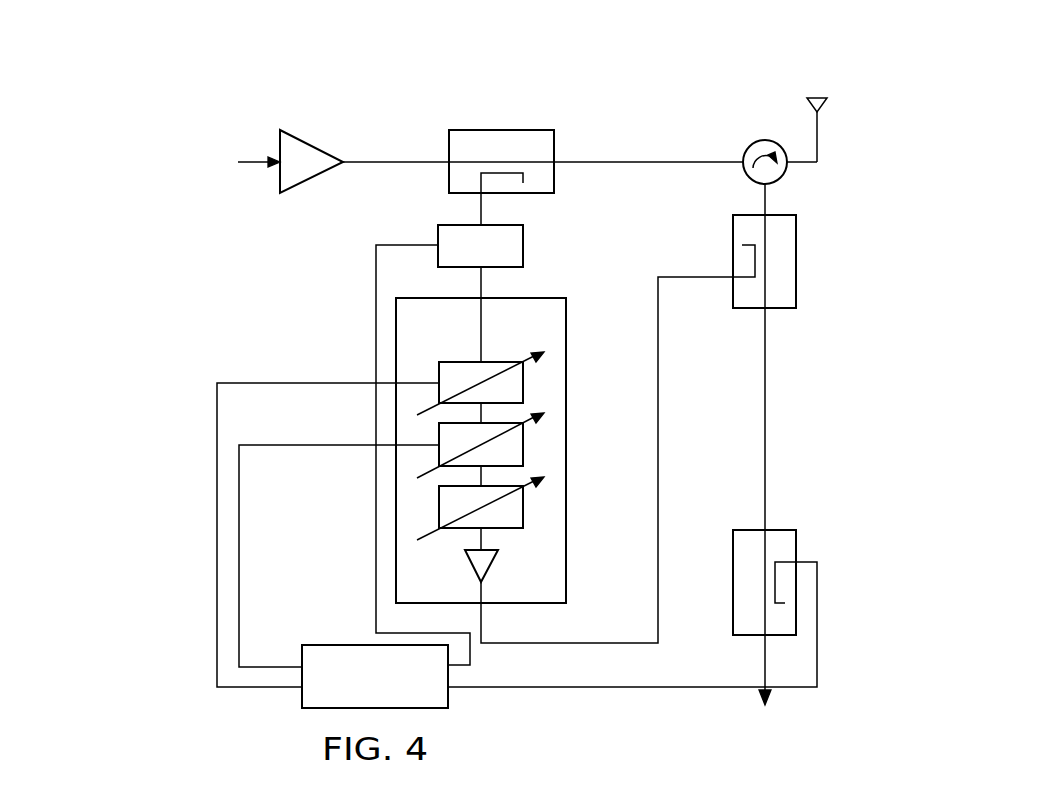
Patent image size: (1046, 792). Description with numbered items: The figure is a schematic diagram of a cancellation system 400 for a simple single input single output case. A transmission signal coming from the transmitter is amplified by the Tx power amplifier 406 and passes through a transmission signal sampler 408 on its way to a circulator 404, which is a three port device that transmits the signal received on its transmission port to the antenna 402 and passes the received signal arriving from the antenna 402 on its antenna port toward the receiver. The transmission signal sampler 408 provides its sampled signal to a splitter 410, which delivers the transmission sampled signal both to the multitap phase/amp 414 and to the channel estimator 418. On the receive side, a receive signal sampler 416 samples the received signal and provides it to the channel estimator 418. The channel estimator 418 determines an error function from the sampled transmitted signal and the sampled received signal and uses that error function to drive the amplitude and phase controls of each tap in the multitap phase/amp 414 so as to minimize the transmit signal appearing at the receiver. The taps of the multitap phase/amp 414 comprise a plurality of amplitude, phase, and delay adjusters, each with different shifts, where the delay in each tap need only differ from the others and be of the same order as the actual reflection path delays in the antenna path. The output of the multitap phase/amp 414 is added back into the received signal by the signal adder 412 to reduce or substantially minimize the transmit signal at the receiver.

The cancellation system 400 is at (170, 88).
The antenna 402 is at (820, 97).
The circulator 404 is at (765, 139).
The Tx power amplifier 406 is at (313, 182).
The transmission signal sampler 408 is at (500, 130).
The splitter 410 is at (526, 243).
The signal adder 412 is at (797, 267).
The multitap phase/amp 414 is at (574, 478).
The receive signal sampler 416 is at (733, 582).
The channel estimator 418 is at (302, 697).